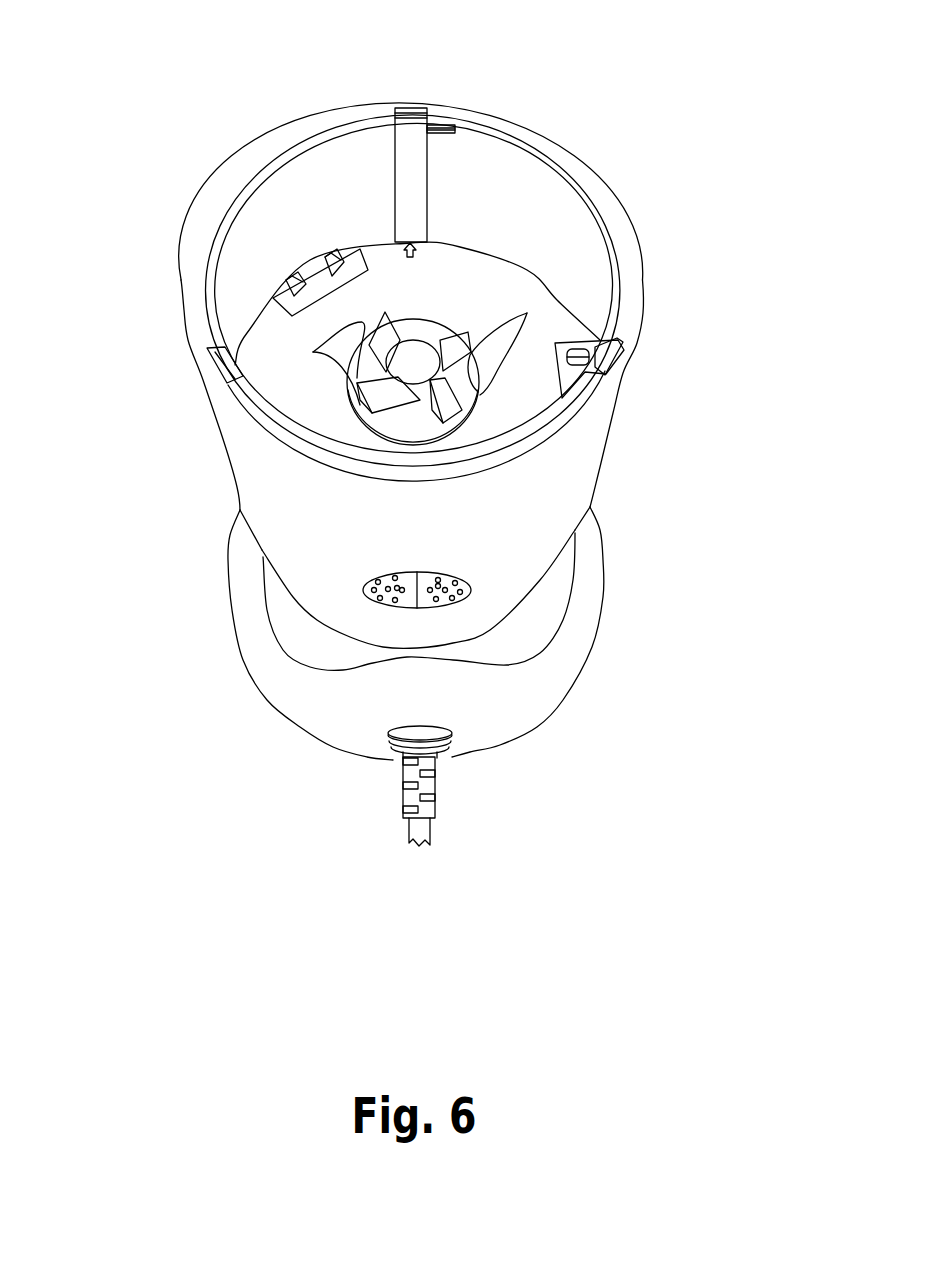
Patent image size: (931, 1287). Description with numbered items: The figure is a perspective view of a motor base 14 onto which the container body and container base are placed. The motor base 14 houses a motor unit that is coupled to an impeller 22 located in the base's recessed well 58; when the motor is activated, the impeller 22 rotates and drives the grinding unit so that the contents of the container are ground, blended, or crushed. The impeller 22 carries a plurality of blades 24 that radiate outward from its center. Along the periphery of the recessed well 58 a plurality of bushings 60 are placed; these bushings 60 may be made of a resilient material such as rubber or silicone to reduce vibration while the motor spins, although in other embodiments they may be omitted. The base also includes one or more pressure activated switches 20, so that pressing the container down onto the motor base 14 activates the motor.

The motor base 14 is at (168, 201).
The pressure activated switches 20 is at (393, 177).
The impeller 22 is at (412, 340).
The blades 24 is at (440, 112).
The recessed well 58 is at (457, 304).
The bushings 60 is at (307, 270).